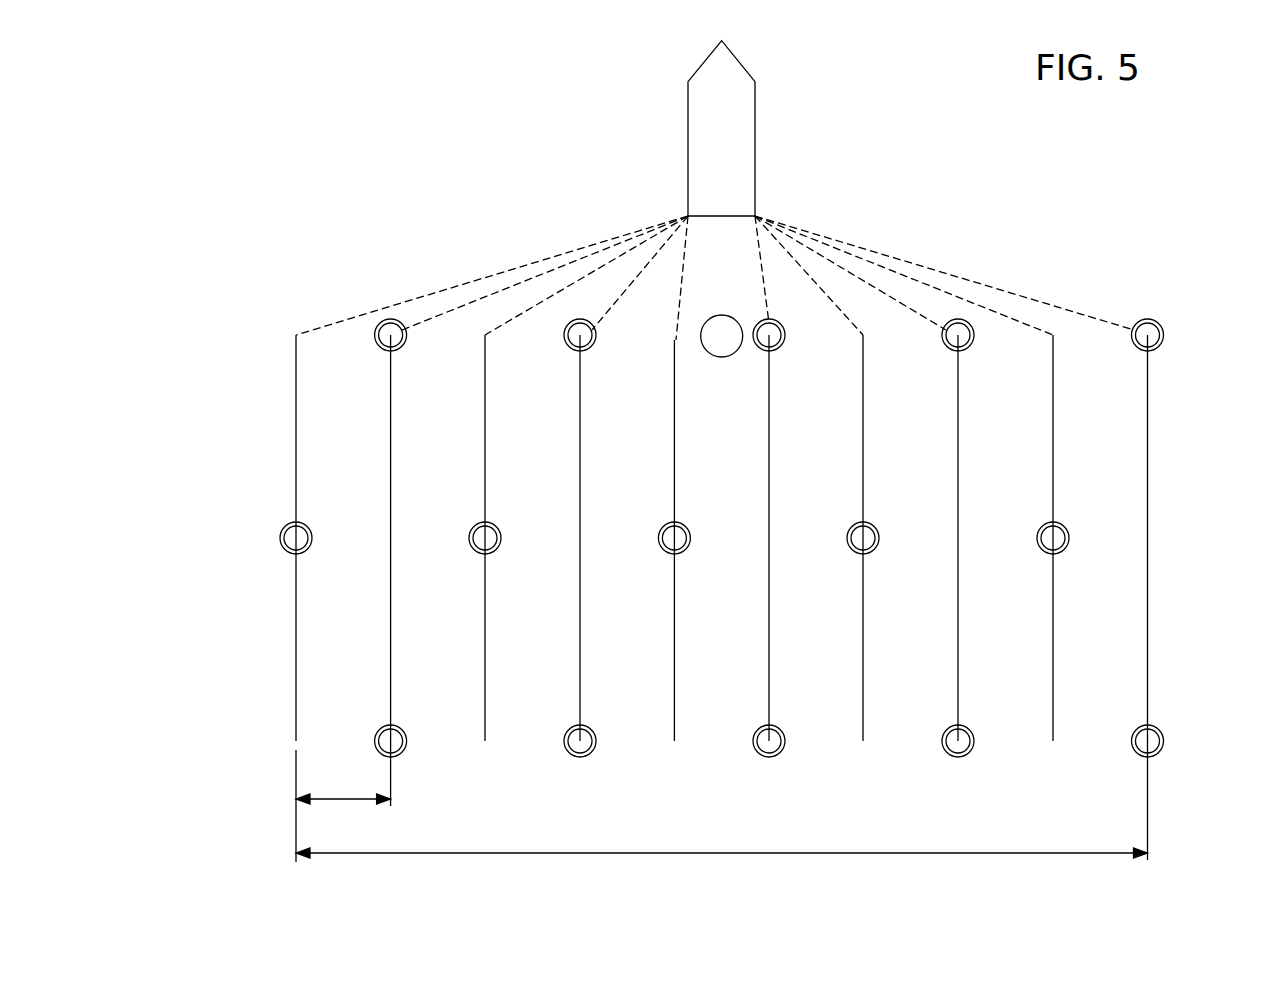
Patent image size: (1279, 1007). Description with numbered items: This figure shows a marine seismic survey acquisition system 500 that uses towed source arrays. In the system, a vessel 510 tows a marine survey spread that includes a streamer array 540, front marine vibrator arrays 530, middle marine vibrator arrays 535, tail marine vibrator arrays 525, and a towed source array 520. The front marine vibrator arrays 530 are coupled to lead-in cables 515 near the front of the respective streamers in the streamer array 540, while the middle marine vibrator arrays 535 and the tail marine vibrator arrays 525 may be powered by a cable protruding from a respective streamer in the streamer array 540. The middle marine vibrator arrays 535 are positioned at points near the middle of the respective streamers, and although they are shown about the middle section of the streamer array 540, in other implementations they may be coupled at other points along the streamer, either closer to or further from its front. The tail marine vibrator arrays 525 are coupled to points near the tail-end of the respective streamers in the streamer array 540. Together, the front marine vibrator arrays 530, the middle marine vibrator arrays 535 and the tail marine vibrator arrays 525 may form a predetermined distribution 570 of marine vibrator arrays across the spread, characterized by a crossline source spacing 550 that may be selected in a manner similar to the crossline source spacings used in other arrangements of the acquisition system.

The marine seismic survey acquisition system 500 is at (478, 100).
The vessel 510 is at (688, 128).
The lead-in cables 515 is at (505, 287).
The towed source array 520 is at (706, 322).
The tail marine vibrator arrays 525 is at (400, 730).
The front marine vibrator arrays 530 is at (390, 335).
The middle marine vibrator arrays 535 is at (284, 552).
The streamer array 540 is at (296, 508).
The crossline source spacing 550 is at (343, 800).
The predetermined distribution 570 is at (722, 853).